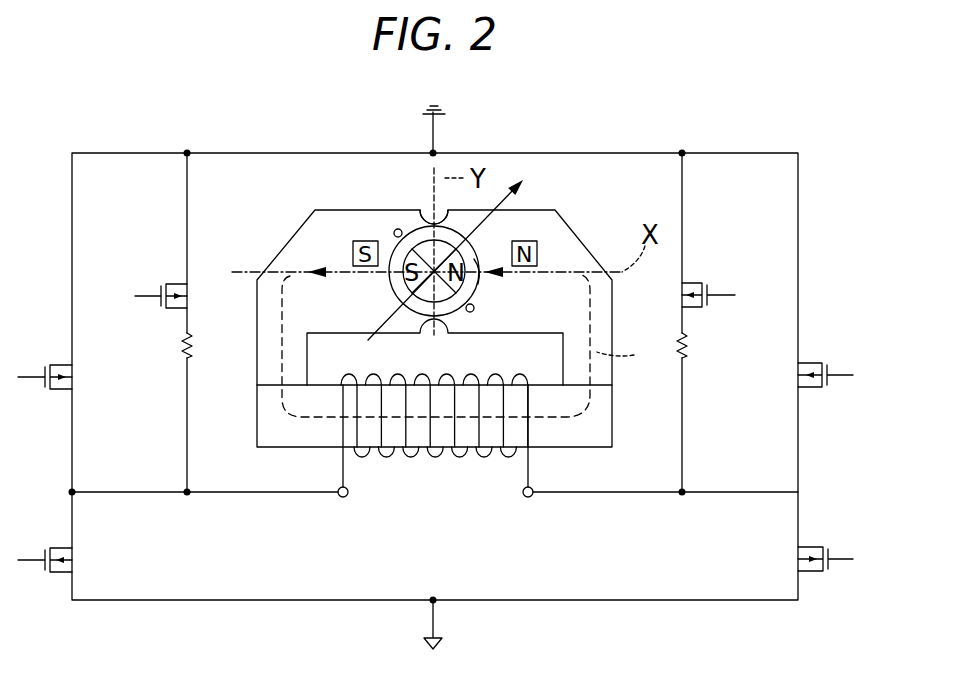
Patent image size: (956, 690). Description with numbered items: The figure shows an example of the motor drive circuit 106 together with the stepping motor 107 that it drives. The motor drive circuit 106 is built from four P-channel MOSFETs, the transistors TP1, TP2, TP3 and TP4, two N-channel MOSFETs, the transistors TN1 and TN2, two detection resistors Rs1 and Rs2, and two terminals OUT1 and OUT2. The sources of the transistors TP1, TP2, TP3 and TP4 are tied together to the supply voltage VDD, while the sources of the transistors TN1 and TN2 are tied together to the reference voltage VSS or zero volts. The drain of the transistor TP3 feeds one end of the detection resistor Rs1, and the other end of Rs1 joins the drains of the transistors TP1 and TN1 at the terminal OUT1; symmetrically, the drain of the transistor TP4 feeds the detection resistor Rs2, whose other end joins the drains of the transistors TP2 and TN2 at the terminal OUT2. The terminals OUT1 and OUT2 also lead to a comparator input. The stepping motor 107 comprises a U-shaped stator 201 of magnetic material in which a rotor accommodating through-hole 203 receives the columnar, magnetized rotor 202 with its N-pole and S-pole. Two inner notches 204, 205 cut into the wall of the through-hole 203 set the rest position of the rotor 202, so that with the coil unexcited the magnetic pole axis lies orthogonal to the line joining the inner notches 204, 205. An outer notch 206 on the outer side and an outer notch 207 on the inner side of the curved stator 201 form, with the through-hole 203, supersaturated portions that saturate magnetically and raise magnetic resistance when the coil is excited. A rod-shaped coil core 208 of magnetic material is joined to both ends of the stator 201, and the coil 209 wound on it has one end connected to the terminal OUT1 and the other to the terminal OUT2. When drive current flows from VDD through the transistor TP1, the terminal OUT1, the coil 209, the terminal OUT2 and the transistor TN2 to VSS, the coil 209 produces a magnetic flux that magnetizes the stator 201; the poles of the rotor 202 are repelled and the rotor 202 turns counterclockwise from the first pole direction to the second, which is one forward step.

The motor drive circuit 106 is at (769, 152).
The stepping motor 107 is at (283, 228).
The stator 201 is at (600, 315).
The rotor 202 is at (458, 253).
The rotor accommodating through-hole 203 is at (480, 282).
The inner notch 204 is at (474, 312).
The inner notch 205 is at (401, 229).
The outer notch 206 is at (427, 212).
The outer notch 207 is at (428, 329).
The coil core 208 is at (606, 426).
The coil 209 is at (461, 470).
The transistor TP1 is at (66, 364).
The transistor TP2 is at (804, 362).
The transistor TP3 is at (185, 284).
The transistor TP4 is at (688, 283).
The transistor TN1 is at (66, 548).
The transistor TN2 is at (808, 546).
The detection resistor Rs1 is at (182, 348).
The detection resistor Rs2 is at (690, 347).
The terminal OUT1 is at (343, 517).
The terminal OUT2 is at (528, 517).